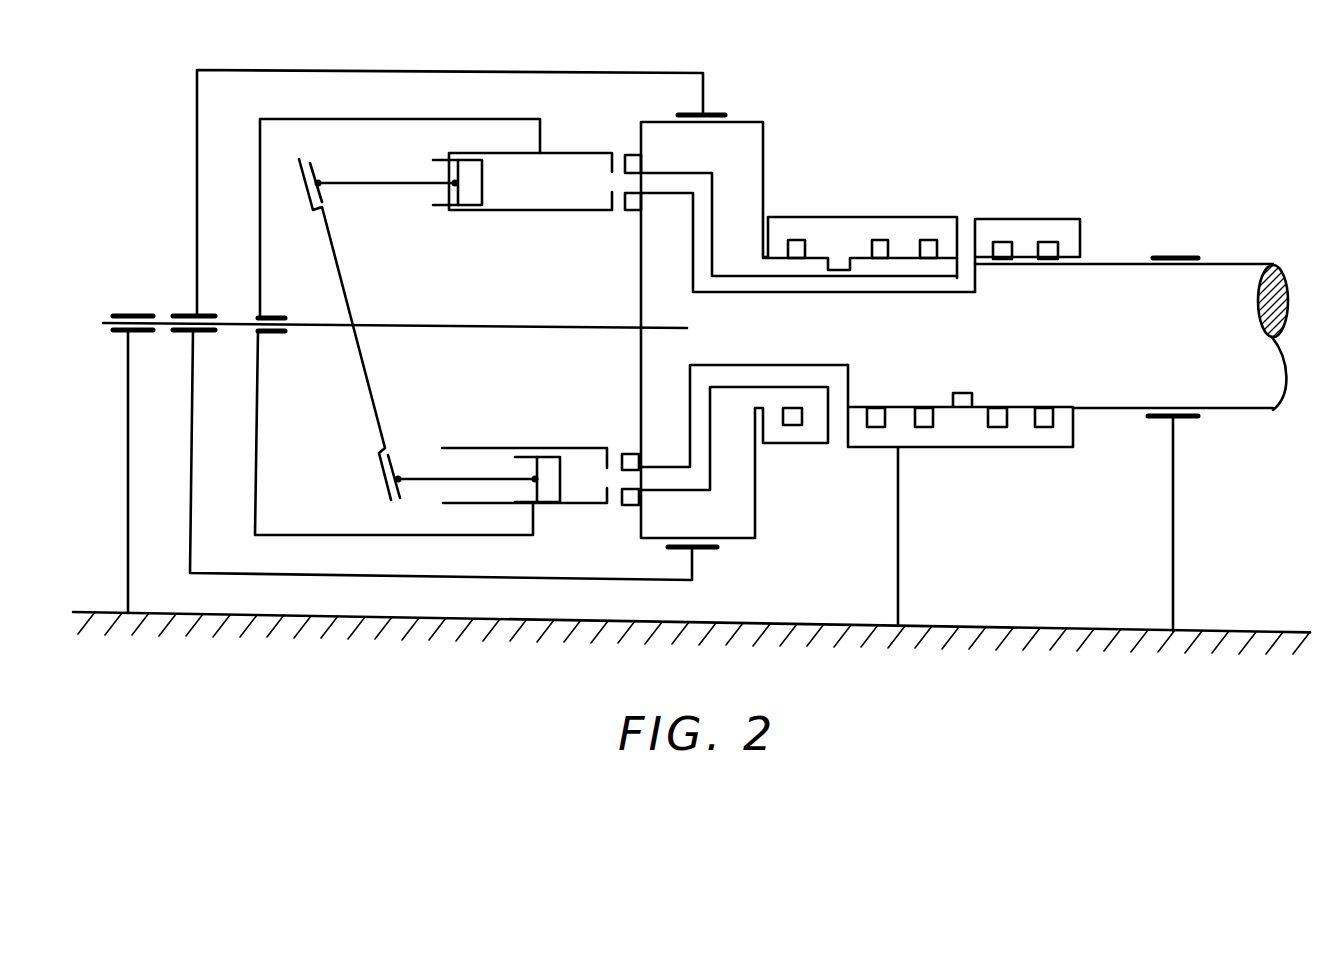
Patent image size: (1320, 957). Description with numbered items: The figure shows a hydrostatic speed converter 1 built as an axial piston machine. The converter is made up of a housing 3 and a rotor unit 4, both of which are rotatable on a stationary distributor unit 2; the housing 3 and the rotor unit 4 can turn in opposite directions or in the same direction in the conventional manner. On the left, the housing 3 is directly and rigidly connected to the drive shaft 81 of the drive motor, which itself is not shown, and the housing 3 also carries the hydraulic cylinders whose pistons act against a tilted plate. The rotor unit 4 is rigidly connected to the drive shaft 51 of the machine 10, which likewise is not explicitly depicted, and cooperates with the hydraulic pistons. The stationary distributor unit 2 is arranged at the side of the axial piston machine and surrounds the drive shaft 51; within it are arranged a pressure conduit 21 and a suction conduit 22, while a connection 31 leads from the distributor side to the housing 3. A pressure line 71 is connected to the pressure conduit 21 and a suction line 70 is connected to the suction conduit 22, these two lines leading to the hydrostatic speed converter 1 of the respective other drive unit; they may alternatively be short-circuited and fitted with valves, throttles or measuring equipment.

The hydrostatic speed converter 1 is at (722, 95).
The stationary distributor unit 2 is at (1032, 222).
The housing 3 is at (390, 137).
The rotor unit 4 is at (755, 145).
The machine 10 is at (257, 82).
The pressure conduit 21 is at (870, 286).
The suction conduit 22 is at (785, 362).
The connection 31 is at (635, 213).
The drive shaft 51 is at (1100, 276).
The suction line 70 is at (837, 432).
The pressure line 71 is at (966, 240).
The drive shaft 81 is at (165, 318).